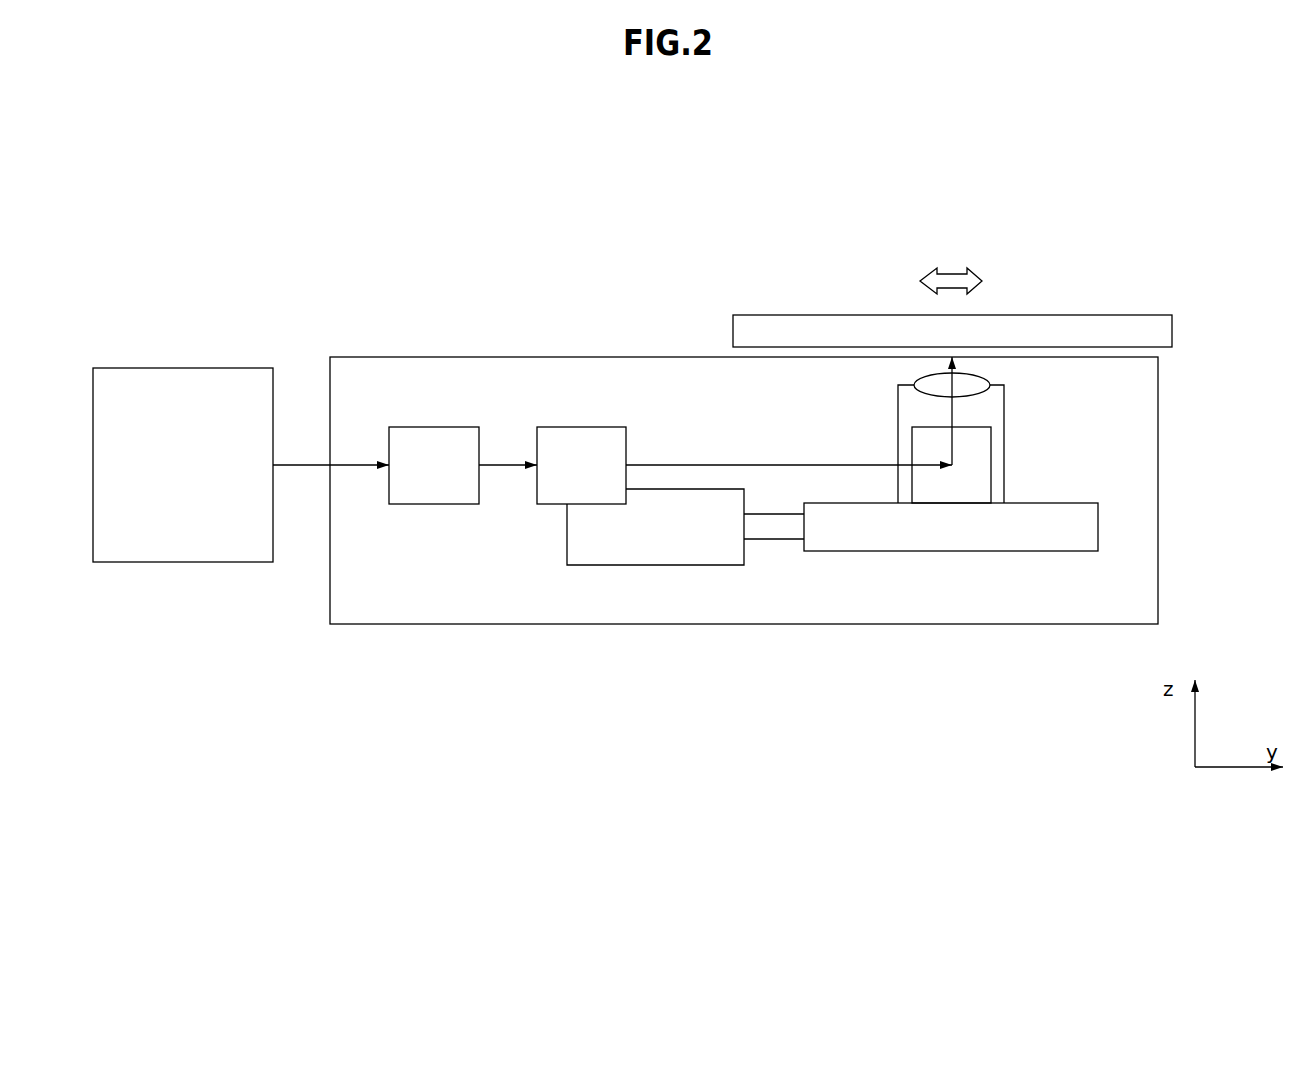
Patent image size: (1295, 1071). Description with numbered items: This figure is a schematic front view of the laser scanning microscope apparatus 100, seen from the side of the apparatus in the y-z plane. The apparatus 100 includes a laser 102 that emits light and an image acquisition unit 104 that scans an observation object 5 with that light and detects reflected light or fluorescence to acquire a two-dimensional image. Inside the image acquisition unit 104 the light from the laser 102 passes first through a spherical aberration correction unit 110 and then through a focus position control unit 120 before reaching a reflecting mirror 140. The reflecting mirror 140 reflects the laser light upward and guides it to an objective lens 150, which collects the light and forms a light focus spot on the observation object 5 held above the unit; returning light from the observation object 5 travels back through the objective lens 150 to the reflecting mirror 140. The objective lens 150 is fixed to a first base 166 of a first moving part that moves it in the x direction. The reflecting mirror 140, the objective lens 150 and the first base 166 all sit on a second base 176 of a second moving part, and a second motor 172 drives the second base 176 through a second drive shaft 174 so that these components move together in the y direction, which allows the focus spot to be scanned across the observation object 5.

The laser scanning microscope apparatus 100 is at (1124, 181).
The laser 102 is at (221, 367).
The image acquisition unit 104 is at (601, 356).
The spherical aberration correction unit 110 is at (447, 426).
The focus position control unit 120 is at (596, 426).
The reflecting mirror 140 is at (991, 444).
The objective lens 150 is at (994, 384).
The first base 166 is at (898, 395).
The second motor 172 is at (691, 567).
The second drive shaft 174 is at (772, 541).
The second base 176 is at (1062, 501).
The observation object 5 is at (1078, 314).